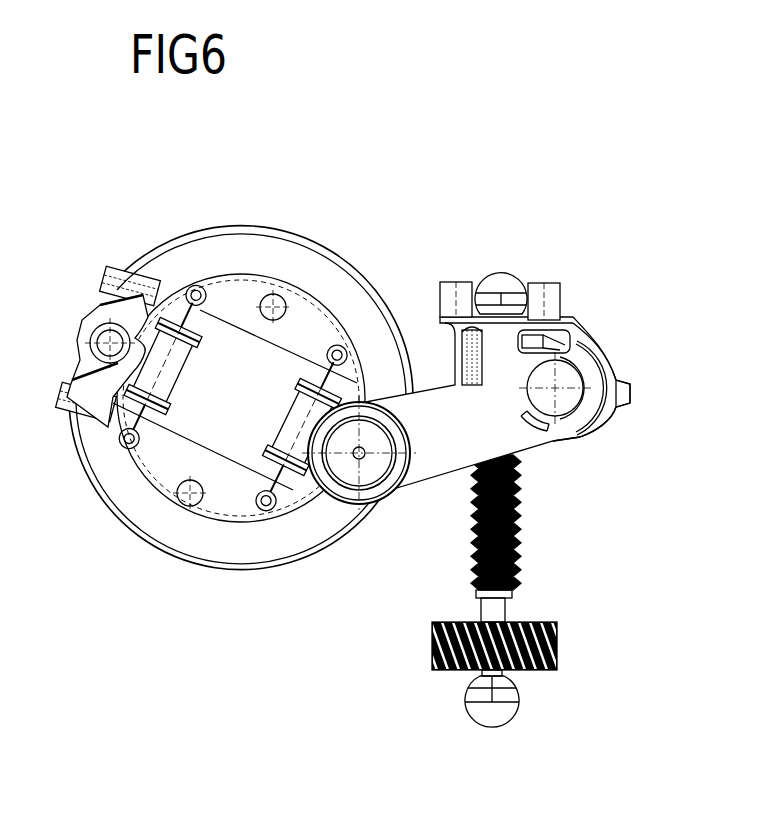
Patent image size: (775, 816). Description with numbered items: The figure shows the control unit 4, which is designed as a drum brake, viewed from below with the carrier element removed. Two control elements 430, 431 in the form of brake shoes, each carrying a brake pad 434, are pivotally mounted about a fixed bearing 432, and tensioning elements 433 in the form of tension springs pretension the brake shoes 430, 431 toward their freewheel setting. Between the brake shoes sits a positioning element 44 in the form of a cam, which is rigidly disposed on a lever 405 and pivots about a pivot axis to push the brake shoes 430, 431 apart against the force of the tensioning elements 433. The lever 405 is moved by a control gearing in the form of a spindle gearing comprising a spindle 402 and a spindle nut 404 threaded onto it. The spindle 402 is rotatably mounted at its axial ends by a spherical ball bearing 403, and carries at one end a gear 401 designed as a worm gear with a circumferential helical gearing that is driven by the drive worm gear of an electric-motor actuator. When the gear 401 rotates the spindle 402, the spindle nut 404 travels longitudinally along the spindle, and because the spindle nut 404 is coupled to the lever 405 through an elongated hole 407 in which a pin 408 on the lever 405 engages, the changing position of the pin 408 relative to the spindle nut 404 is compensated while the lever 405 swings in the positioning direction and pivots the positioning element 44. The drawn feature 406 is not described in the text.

The control unit 4 is at (476, 214).
The positioning element 44 is at (370, 511).
The gear 401 is at (557, 650).
The spindle 402 is at (520, 522).
The spherical ball bearing 403 is at (507, 282).
The spindle nut 404 is at (590, 435).
The lever 405 is at (445, 443).
The projection 406 is at (630, 385).
The elongated hole 407 is at (598, 368).
The pin 408 is at (548, 403).
The control element 430 is at (296, 265).
The control element 431 is at (244, 548).
The fixed bearing 432 is at (100, 330).
The tensioning element 433 is at (176, 350).
The brake pad 434 is at (243, 228).